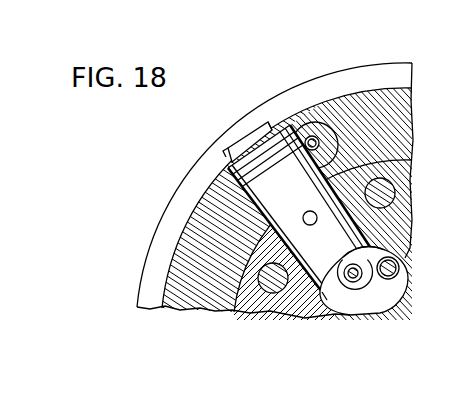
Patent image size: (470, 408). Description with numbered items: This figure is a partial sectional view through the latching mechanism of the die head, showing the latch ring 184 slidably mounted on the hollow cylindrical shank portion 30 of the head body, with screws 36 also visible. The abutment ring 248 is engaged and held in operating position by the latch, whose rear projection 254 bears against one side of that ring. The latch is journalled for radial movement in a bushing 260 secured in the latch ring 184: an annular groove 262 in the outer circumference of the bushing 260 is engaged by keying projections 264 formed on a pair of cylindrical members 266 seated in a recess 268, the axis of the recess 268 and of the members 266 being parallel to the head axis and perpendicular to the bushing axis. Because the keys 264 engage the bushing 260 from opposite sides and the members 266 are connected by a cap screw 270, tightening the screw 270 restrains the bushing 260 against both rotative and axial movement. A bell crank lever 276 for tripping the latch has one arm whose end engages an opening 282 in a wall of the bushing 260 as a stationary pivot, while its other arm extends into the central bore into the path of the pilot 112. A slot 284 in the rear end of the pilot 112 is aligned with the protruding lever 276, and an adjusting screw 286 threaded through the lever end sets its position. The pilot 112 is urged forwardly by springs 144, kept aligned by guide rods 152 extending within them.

The abutment ring 248 is at (164, 216).
The latch ring 184 is at (203, 310).
The screws 36 is at (273, 293).
The rear projection 254 is at (232, 150).
The bushing 260 is at (225, 152).
The cap screw 270 is at (288, 88).
The keying projections 264 is at (259, 132).
The annular groove 262 is at (274, 180).
The opening 282 is at (305, 224).
The cylindrical members 266 is at (316, 122).
The recess 268 is at (307, 123).
The springs 144 is at (400, 268).
The guide rods 152 is at (401, 278).
The bell crank lever 276 is at (349, 283).
The adjusting screw 286 is at (391, 286).
The slot 284 is at (366, 289).
The pilot 112 is at (362, 315).
The shank portion 30 is at (326, 306).